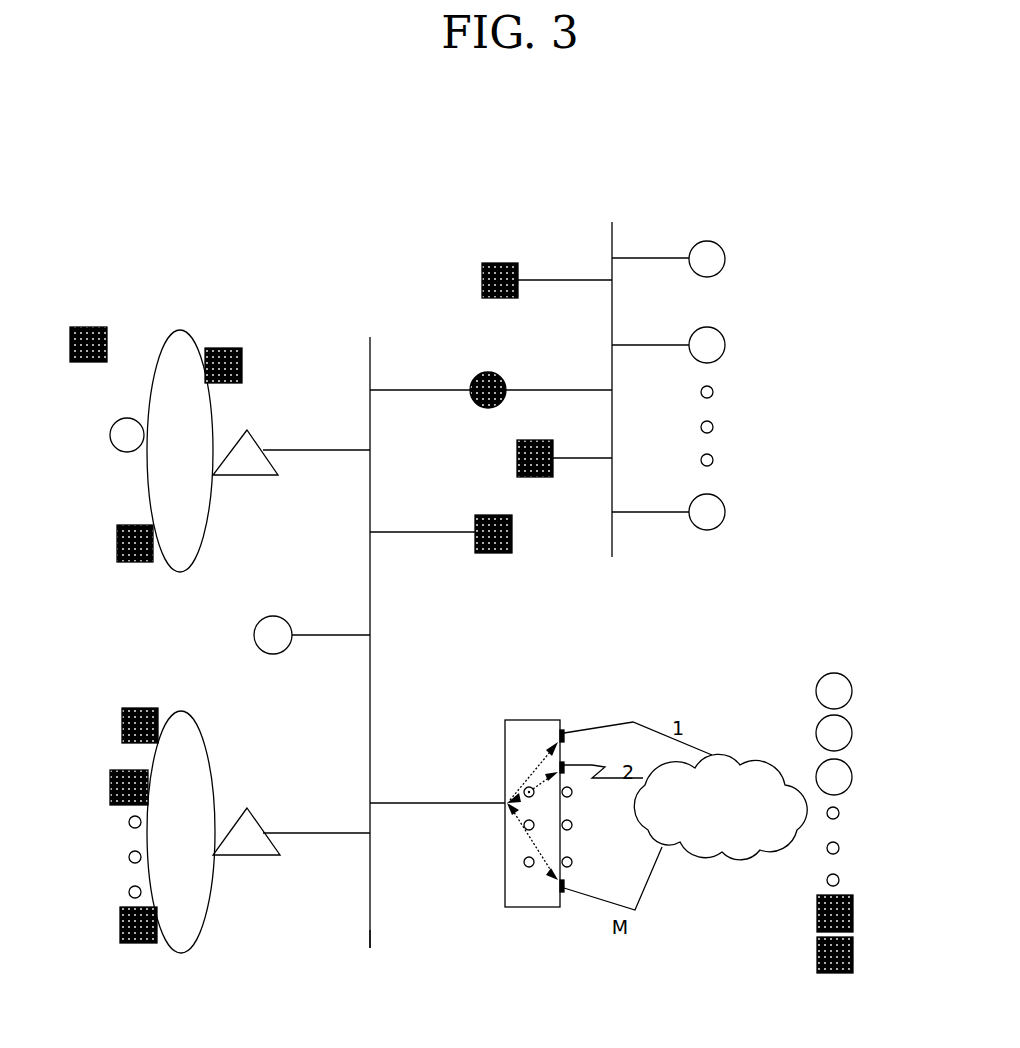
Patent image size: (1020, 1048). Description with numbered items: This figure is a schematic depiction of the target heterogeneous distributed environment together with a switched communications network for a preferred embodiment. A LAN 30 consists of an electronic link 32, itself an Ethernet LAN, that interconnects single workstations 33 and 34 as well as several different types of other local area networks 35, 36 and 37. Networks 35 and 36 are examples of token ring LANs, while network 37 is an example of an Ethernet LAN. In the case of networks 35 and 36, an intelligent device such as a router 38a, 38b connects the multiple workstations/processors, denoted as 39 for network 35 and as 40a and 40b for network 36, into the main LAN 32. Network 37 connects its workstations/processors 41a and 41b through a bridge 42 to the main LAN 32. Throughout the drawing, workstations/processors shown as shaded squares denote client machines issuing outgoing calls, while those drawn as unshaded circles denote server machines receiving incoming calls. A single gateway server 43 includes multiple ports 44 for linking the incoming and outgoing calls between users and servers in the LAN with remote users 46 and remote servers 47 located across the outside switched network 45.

The LAN 30 is at (364, 356).
The electronic link 32 is at (371, 918).
The single workstation 33 is at (279, 617).
The single workstation 34 is at (492, 553).
The local area network 35 is at (195, 703).
The local area network 36 is at (200, 330).
The local area network 37 is at (620, 231).
The router 38a is at (291, 438).
The router 38b is at (258, 820).
The workstations/processors 39 is at (120, 727).
The workstations/processors 40a is at (120, 352).
The workstation/processor 40b is at (112, 427).
The workstations/processors 41a is at (480, 283).
The workstations/processors 41b is at (727, 261).
The bridge 42 is at (485, 372).
The gateway server 43 is at (522, 878).
The ports 44 is at (567, 732).
The switched network 45 is at (733, 746).
The remote users 46 is at (855, 917).
The remote servers 47 is at (853, 691).